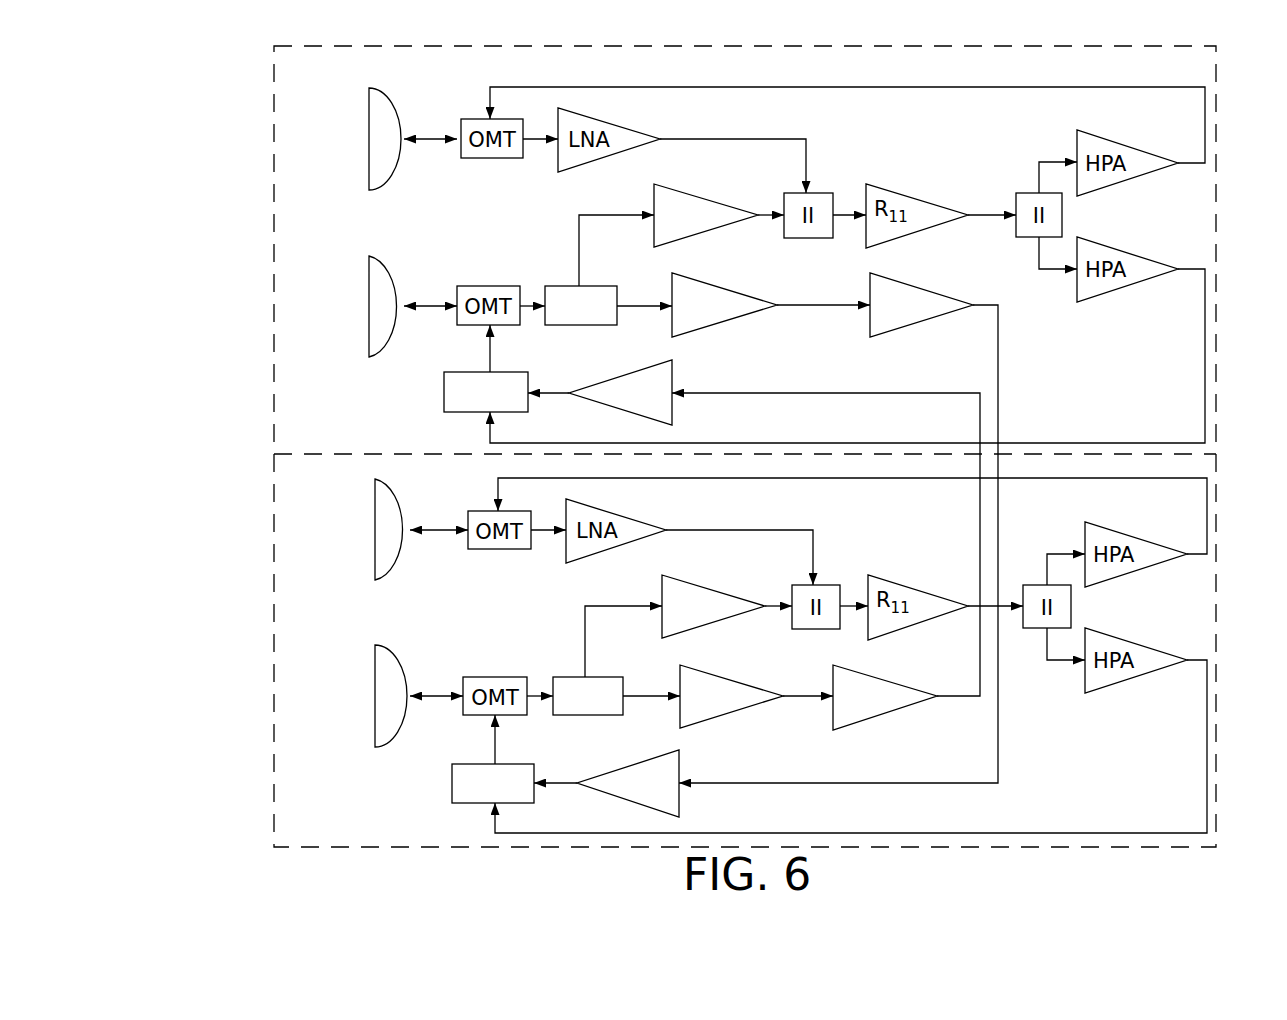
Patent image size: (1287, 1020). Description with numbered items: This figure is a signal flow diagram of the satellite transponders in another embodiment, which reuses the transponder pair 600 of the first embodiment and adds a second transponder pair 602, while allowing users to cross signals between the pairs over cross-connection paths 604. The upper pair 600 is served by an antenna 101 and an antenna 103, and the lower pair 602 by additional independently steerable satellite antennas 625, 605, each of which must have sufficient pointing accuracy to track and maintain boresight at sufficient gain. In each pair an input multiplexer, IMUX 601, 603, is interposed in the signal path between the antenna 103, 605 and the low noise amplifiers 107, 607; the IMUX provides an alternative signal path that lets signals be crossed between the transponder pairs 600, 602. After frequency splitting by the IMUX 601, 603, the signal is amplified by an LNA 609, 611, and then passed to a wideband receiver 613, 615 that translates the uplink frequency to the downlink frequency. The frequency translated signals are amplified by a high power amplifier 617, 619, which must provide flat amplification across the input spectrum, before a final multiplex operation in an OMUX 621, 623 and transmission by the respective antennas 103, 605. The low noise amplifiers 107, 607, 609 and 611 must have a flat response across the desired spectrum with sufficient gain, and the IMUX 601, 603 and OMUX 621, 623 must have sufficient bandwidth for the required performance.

The transponder pair 600 is at (274, 183).
The transponder pair 602 is at (274, 560).
The antenna 101 is at (369, 115).
The antenna 103 is at (369, 270).
The steerable satellite antenna 625 is at (375, 508).
The steerable satellite antenna 605 is at (375, 660).
The low noise amplifier 107 is at (654, 210).
The input multiplexer 601 is at (562, 286).
The input multiplexer 603 is at (568, 677).
The low noise amplifier 611 is at (672, 290).
The receiver 615 is at (870, 290).
The high power amplifier 619 is at (645, 372).
The cross-connection between transponder pairs 604 is at (998, 383).
The output multiplexer 623 is at (444, 405).
The low noise amplifier 607 is at (662, 600).
The low noise amplifier 609 is at (680, 685).
The receiver 613 is at (833, 685).
The high power amplifier 617 is at (650, 760).
The output multiplexer 621 is at (452, 795).